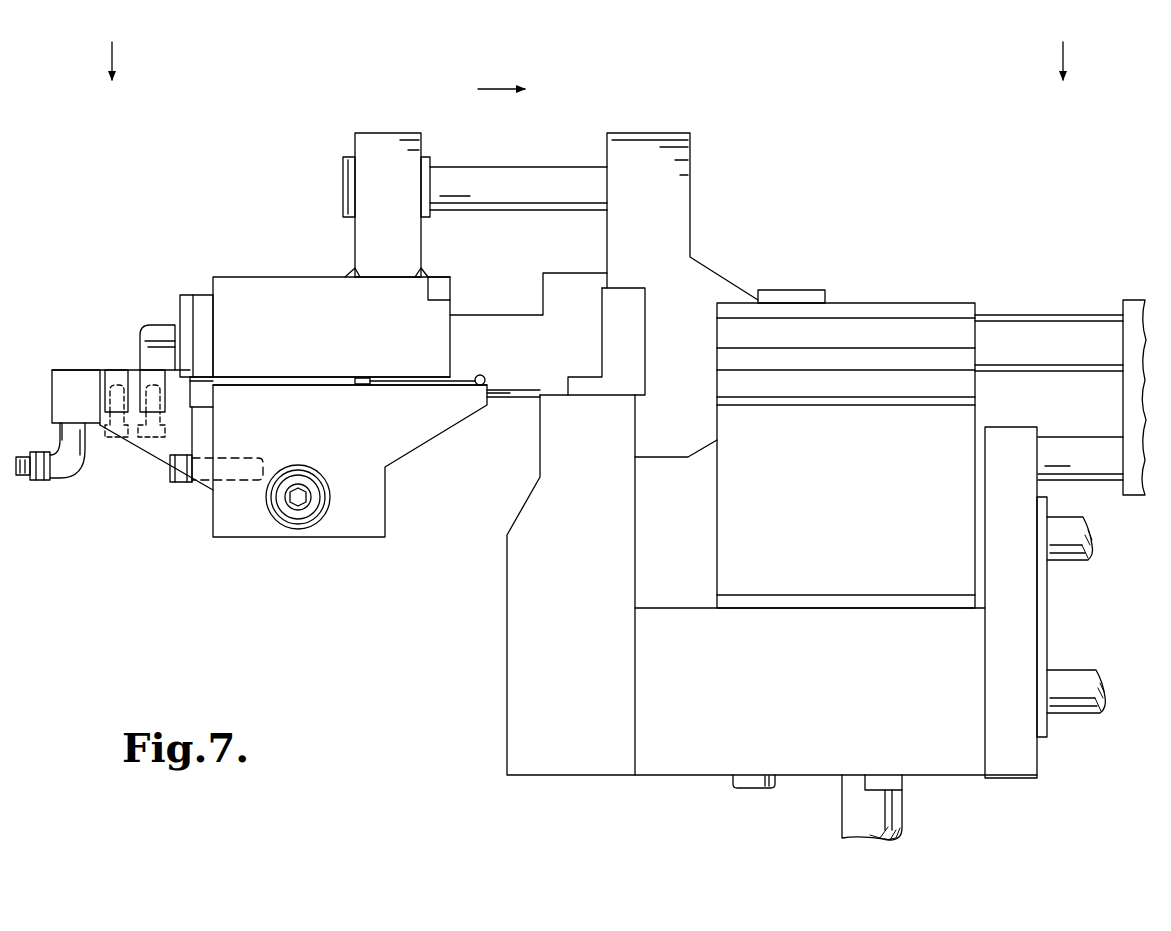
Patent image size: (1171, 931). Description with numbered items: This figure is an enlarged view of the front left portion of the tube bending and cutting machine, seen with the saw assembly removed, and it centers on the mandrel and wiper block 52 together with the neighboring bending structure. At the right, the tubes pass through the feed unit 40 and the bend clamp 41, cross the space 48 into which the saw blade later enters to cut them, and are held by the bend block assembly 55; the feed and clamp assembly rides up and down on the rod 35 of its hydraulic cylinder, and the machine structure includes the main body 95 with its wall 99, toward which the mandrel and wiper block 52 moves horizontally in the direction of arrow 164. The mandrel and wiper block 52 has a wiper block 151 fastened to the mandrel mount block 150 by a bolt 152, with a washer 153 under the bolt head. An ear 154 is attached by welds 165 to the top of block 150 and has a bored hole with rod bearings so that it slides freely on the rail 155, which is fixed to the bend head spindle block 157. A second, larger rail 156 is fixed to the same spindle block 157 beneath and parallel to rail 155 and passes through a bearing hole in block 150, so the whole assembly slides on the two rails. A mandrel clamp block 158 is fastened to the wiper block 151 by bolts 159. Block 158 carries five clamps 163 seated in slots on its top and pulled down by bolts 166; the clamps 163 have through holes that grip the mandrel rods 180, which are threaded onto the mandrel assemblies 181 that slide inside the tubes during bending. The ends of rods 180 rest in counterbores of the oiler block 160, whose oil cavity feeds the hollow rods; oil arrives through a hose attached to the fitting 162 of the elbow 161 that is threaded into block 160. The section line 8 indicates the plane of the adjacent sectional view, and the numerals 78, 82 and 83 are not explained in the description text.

The section line 8- 8 is at (598, 59).
The rod 35 is at (840, 840).
The feed unit 40 is at (1116, 292).
The bend clamp 41 is at (906, 300).
The space 48 is at (716, 513).
The mandrel and wiper block 52 is at (175, 272).
The bend block assembly 55 is at (635, 336).
The guide rod 78 is at (1093, 442).
The lower pin 82 is at (1062, 680).
The upper pin 83 is at (1062, 560).
The main body 95 is at (700, 765).
The wall 99 is at (520, 657).
The mandrel mount block 150 is at (268, 292).
The wiper block 151 is at (330, 535).
The bolt 152 is at (300, 490).
The washer 153 is at (332, 498).
The ear 154 is at (380, 142).
The rail 155 is at (518, 175).
The second larger diametered rail 156 is at (513, 320).
The bend head spindle block 157 is at (690, 158).
The mandrel clamp block 158 is at (192, 432).
The bolts 159 is at (170, 480).
The oiler block 160 is at (62, 390).
The elbow 161 is at (62, 470).
The fitting 162 is at (32, 480).
The clamps 163 is at (143, 378).
The arrow 164 is at (500, 75).
The welds 165 is at (430, 275).
The bolts 166 is at (112, 440).
The mandrel rods 180 is at (245, 380).
The mandrel assemblies 181 is at (428, 380).